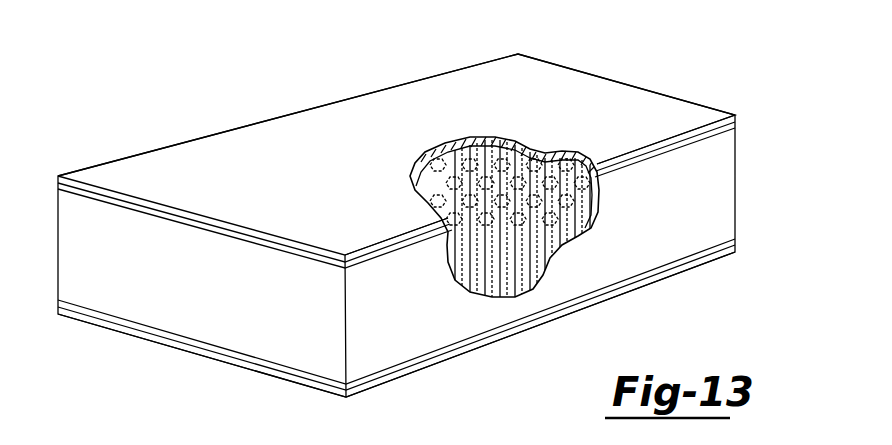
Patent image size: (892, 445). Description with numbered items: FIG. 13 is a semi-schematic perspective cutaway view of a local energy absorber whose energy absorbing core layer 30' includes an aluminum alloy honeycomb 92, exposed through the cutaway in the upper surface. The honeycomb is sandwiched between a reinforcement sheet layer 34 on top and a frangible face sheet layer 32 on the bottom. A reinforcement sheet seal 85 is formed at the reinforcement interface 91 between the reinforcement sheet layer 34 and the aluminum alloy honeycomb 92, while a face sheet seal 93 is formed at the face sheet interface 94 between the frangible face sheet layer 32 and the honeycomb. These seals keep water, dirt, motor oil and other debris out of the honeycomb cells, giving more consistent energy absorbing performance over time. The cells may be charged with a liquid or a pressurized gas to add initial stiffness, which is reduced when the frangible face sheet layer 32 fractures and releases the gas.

The energy absorbing core layer 30' is at (431, 225).
The reinforcement sheet layer 34 is at (742, 113).
The reinforcement sheet seal 85 is at (742, 124).
The reinforcement interface 91 is at (693, 140).
The aluminum alloy honeycomb 92 is at (568, 188).
The face sheet seal 93 is at (742, 241).
The face sheet interface 94 is at (685, 262).
The frangible face sheet layer 32 is at (737, 251).